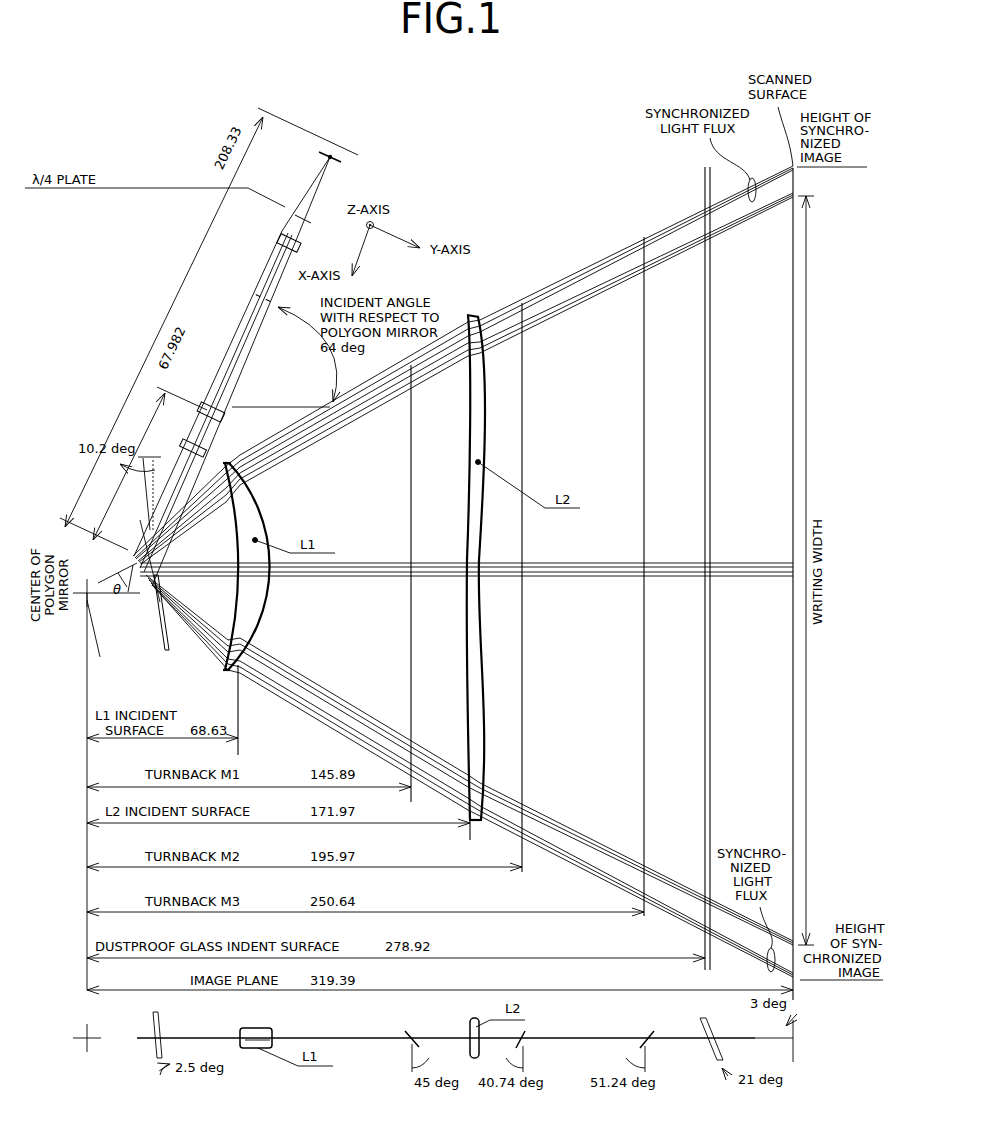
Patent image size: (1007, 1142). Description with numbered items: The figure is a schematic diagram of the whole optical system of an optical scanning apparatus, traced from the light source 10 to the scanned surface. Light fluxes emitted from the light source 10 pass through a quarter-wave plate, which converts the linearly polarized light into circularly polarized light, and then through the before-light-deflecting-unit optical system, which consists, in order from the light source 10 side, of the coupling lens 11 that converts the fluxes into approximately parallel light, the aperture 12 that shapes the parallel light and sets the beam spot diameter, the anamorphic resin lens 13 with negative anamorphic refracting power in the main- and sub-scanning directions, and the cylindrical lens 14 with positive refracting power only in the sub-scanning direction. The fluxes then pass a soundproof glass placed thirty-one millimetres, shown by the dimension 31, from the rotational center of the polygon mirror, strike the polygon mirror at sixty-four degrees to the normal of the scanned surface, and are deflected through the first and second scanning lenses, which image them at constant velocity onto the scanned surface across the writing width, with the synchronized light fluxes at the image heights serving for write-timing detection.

The light source 10 is at (345, 160).
The coupling lens 11 is at (277, 228).
The aperture 12 is at (280, 305).
The anamorphic resin lens 13 is at (203, 408).
The cylindrical lens 14 is at (187, 443).
The soundproof glass 31 is at (165, 641).